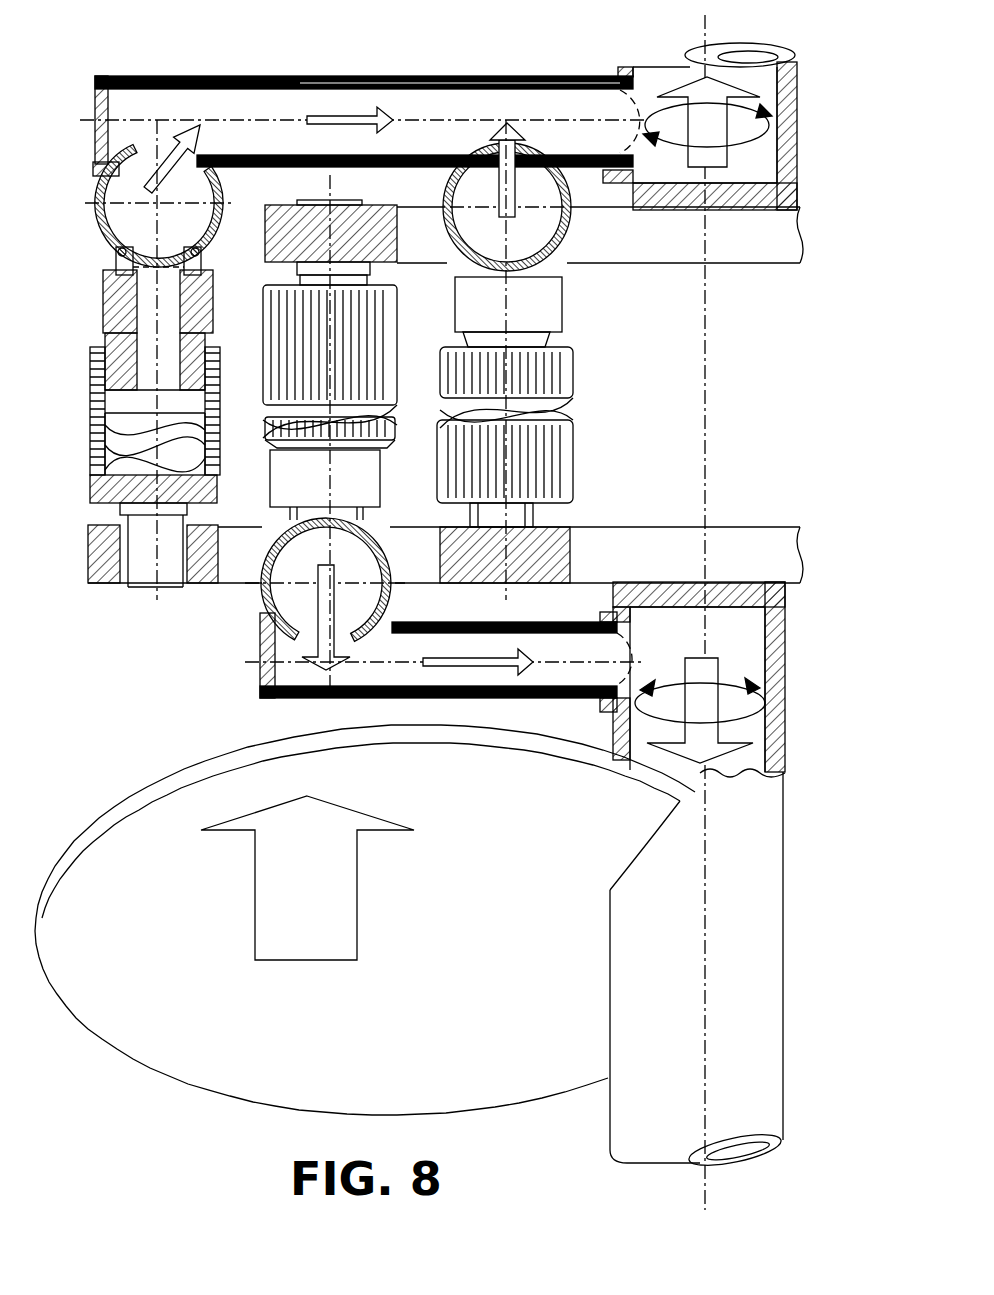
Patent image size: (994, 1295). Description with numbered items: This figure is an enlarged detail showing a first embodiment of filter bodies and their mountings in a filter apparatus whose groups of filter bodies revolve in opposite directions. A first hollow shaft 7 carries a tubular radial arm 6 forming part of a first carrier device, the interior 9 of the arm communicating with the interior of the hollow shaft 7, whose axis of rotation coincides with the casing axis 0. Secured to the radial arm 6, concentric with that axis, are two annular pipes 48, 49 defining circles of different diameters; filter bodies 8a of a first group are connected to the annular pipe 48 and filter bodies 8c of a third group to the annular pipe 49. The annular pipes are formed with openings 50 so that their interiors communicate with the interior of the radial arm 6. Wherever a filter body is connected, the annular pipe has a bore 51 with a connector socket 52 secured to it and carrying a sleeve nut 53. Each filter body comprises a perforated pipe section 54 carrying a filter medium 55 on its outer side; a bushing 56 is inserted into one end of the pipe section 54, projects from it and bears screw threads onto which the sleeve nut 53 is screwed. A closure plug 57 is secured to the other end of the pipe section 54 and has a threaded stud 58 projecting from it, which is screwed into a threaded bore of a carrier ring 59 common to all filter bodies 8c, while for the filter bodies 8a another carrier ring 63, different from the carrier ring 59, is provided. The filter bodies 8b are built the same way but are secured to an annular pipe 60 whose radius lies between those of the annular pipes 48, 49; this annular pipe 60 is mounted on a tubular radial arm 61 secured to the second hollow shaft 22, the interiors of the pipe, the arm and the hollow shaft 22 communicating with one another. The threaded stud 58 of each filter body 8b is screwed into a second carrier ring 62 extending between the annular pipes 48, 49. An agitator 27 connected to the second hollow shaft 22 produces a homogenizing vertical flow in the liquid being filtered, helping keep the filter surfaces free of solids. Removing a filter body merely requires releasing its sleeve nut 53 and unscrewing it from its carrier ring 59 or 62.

The casing axis 0 is at (712, 396).
The tubular radial arm 6 is at (433, 78).
The first hollow shaft 7 is at (805, 95).
The interior of radial arm 9 is at (490, 107).
The second hollow shaft 22 is at (785, 648).
The agitator 27 is at (498, 885).
The annular pipe 48 is at (600, 235).
The annular pipe 49 is at (227, 203).
The opening 50 is at (163, 143).
The bore 51 is at (108, 233).
The connector socket 52 is at (120, 263).
The sleeve nut 53 is at (105, 303).
The perforated pipe section 54 is at (112, 457).
The filter medium 55 is at (92, 456).
The bushing 56 is at (217, 350).
The closure plug 57 is at (200, 500).
The threaded stud 58 is at (172, 575).
The carrier ring 59 is at (100, 583).
The annular pipe 60 is at (261, 600).
The tubular radial arm 61 is at (510, 622).
The second carrier ring 62 is at (380, 223).
The carrier ring 63 is at (570, 527).
The filter bodies 8a is at (575, 385).
The filter bodies 8b is at (395, 378).
The filter bodies 8c is at (88, 398).